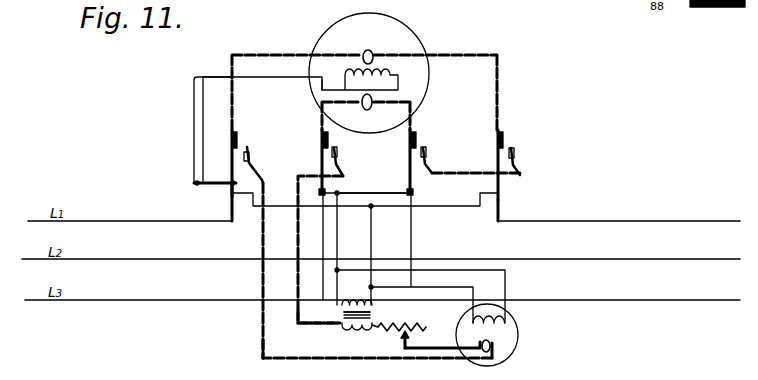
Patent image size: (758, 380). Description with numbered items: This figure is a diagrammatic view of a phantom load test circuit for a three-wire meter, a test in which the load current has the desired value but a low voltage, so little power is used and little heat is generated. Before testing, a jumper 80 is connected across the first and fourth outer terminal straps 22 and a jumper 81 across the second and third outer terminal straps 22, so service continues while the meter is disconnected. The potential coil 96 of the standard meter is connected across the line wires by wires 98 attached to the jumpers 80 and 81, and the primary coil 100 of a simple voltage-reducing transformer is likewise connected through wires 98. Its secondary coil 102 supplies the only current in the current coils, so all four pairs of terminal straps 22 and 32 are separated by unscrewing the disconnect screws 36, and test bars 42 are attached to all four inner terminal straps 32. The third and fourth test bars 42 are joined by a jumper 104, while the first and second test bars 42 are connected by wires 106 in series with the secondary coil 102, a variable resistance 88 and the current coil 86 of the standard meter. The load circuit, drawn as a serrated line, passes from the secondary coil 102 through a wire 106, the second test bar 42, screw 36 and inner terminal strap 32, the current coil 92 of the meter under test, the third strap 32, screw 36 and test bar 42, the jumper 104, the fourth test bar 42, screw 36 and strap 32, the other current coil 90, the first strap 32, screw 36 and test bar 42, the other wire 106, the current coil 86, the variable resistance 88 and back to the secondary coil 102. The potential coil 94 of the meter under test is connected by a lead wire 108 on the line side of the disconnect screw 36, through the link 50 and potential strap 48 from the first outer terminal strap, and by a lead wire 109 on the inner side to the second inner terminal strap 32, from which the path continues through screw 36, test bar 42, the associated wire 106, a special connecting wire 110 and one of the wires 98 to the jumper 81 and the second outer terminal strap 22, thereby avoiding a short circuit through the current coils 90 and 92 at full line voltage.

The outer terminal strap 22 is at (232, 152).
The inner terminal strap 32 is at (236, 139).
The disconnect screw 36 is at (250, 153).
The test bar 42 is at (253, 169).
The potential connecting strap 48 is at (193, 140).
The horizontal bar 50 is at (212, 189).
The jumper 80 is at (277, 205).
The jumper 81 is at (368, 192).
The current coil of the standard meter 86 is at (494, 348).
The variable resistance 88 is at (400, 326).
The current coil 90 is at (372, 55).
The current coil 92 is at (370, 110).
The potential coil 94 is at (392, 73).
The potential coil of the standard meter 96 is at (500, 316).
The wires 98 is at (371, 244).
The primary coil 100 is at (352, 303).
The secondary coil 102 is at (365, 330).
The jumper 104 is at (510, 178).
The wires 106 is at (298, 321).
The lead wire 108 is at (210, 76).
The lead wire 109 is at (322, 88).
The special connecting wire 110 is at (337, 323).